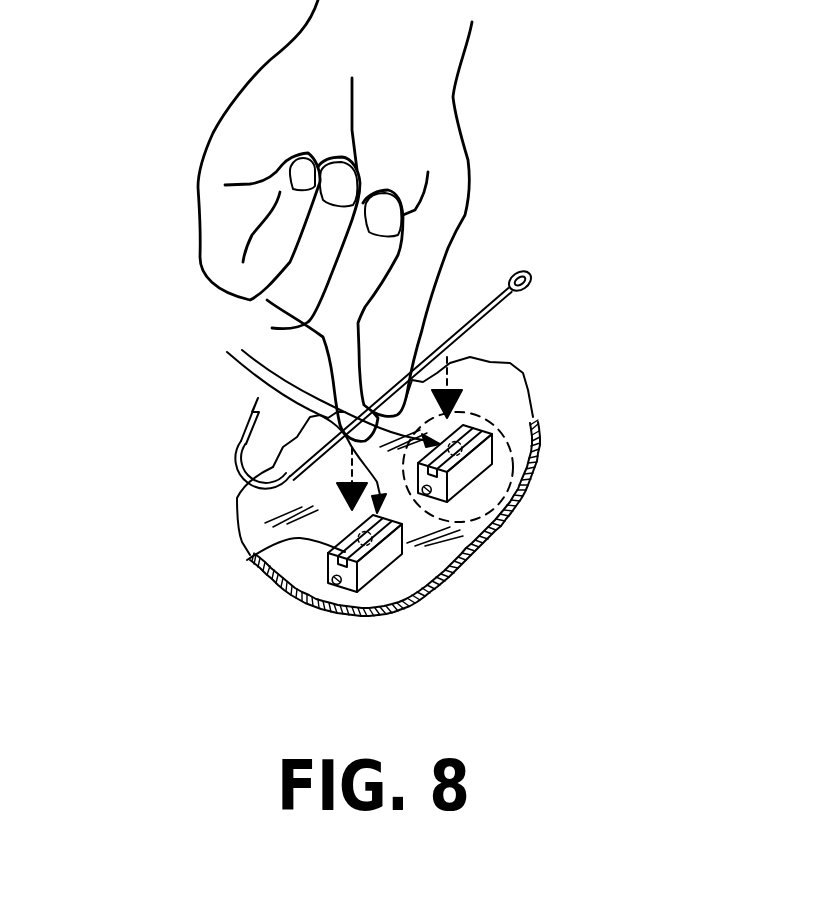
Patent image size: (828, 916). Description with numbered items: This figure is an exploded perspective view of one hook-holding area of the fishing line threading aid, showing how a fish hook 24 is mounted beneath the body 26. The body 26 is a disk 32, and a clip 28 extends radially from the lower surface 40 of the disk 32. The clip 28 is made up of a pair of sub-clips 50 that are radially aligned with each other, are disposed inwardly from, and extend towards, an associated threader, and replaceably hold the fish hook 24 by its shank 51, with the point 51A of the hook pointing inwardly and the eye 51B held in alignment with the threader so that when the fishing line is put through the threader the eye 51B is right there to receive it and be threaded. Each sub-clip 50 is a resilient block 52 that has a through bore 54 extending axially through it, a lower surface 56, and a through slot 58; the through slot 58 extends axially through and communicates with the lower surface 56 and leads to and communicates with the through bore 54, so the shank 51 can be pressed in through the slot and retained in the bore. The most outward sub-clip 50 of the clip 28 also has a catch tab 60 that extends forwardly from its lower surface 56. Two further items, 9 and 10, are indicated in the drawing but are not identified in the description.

The fishing rig assembly 9 is at (266, 625).
The base 10 is at (519, 416).
The fish hook 24 is at (483, 285).
The body 26 is at (222, 500).
The clip 28 is at (447, 575).
The disk 32 is at (403, 412).
The lower surface 40 is at (247, 523).
The sub-clip 50 is at (297, 413).
The shank 51 is at (484, 341).
The point 51A is at (222, 418).
The eye 51B is at (533, 282).
The block 52 is at (333, 431).
The through bore 54 is at (490, 520).
The lower surface 56 is at (247, 560).
The through slot 58 is at (422, 586).
The catch tab 60 is at (512, 425).